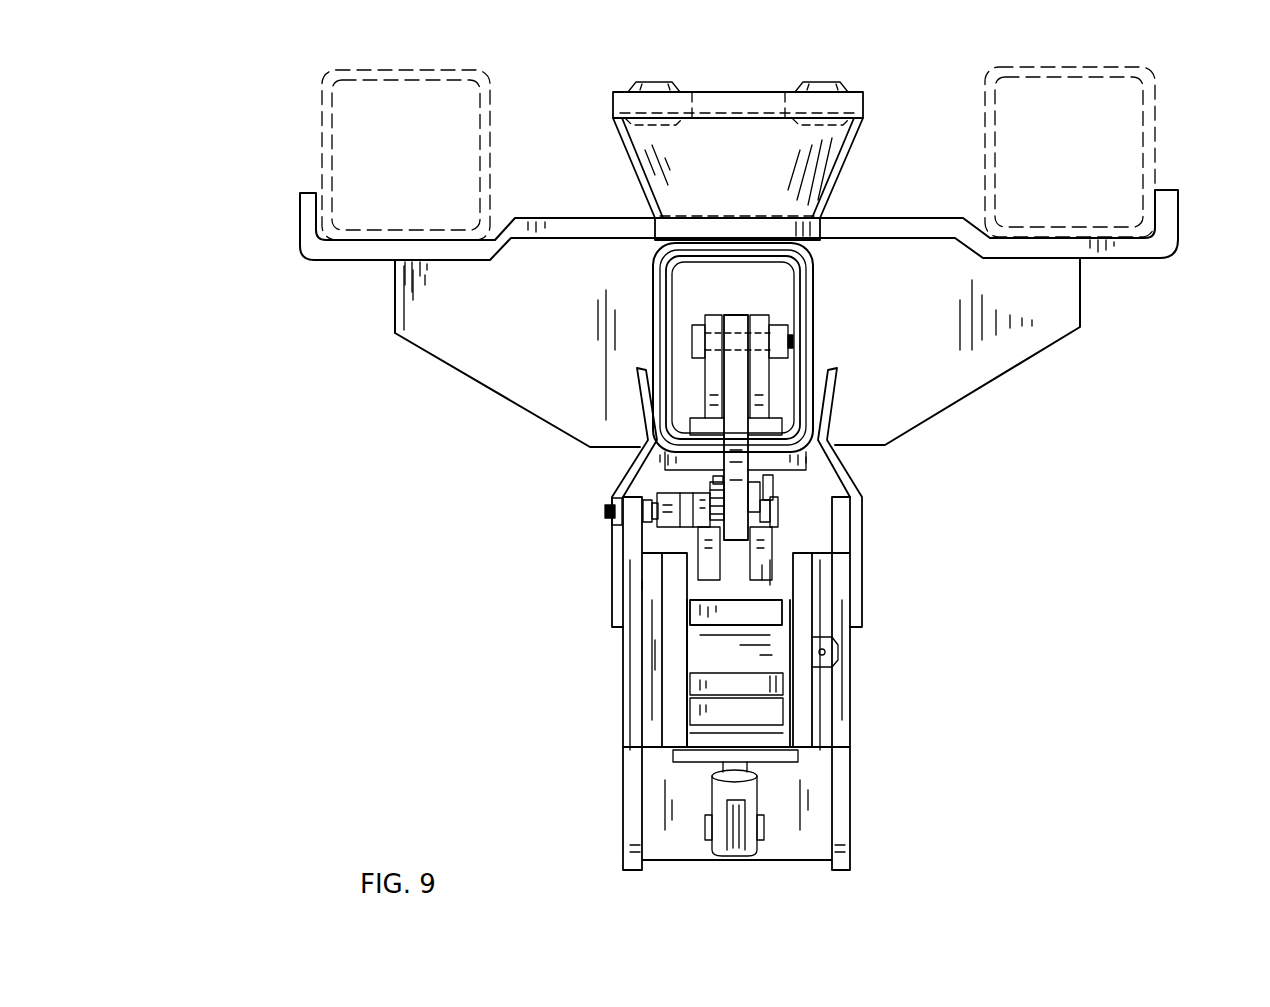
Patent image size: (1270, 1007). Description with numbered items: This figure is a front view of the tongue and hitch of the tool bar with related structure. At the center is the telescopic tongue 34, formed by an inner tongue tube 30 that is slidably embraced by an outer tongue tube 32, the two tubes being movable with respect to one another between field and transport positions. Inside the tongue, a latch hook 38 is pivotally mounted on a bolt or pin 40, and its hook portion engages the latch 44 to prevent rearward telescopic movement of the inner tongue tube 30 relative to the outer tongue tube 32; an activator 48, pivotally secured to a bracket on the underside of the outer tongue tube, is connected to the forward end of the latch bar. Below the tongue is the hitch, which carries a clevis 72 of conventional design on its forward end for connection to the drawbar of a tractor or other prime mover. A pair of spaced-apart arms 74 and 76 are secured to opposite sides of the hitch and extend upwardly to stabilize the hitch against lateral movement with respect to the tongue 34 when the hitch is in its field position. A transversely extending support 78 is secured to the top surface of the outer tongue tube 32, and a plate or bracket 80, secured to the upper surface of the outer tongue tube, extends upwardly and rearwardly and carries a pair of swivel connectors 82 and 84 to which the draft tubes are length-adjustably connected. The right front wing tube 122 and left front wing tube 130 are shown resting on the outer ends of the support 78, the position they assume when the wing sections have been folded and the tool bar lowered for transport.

The inner tongue tube 30 is at (674, 290).
The outer tongue tube 32 is at (818, 302).
The telescopic tongue 34 is at (762, 380).
The latch hook 38 is at (745, 397).
The bolt or pin 40 is at (795, 338).
The latch 44 is at (792, 472).
The activator 48 is at (748, 511).
The clevis 72 is at (765, 612).
The arm 74 is at (625, 462).
The arm 76 is at (848, 467).
The transversely extending support 78 is at (1140, 254).
The plate or bracket 80 is at (743, 149).
The swivel connector 82 is at (650, 82).
The swivel connector 84 is at (826, 82).
The right front wing tube 122 is at (402, 66).
The left front wing tube 130 is at (1068, 66).